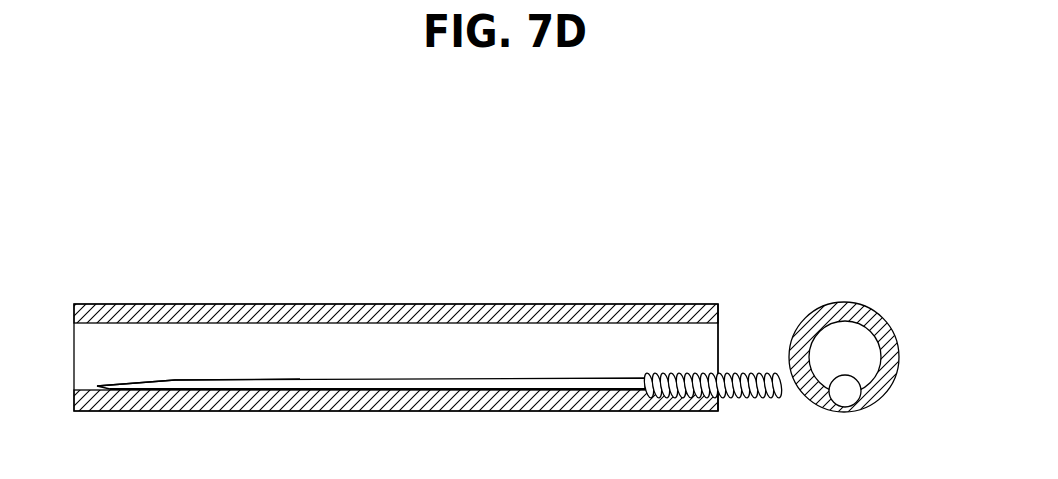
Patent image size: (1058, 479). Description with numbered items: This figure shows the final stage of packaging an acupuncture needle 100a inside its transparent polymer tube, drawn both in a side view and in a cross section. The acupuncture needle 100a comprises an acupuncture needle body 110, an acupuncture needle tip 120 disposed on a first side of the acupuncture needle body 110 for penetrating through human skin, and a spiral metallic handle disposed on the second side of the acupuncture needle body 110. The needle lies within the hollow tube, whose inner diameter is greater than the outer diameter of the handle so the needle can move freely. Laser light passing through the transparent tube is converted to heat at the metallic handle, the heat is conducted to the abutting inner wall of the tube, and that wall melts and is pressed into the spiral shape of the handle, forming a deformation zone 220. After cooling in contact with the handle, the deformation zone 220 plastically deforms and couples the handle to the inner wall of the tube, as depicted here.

The acupuncture needle 100a is at (108, 236).
The acupuncture needle body 110 is at (293, 383).
The acupuncture needle tip 120 is at (179, 386).
The deformation zone 220 is at (685, 305).